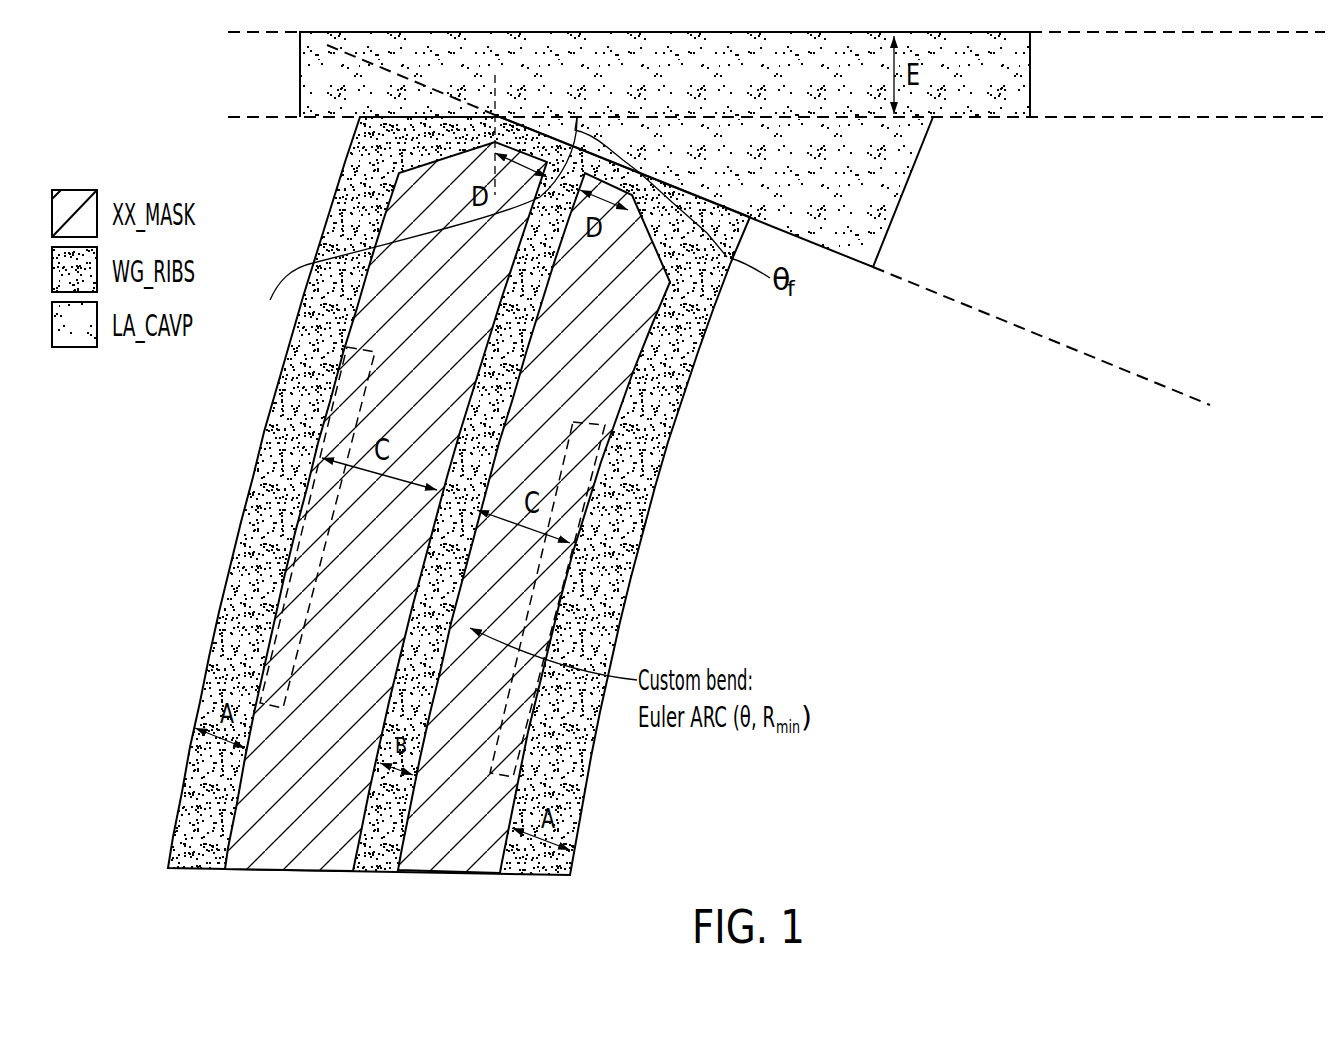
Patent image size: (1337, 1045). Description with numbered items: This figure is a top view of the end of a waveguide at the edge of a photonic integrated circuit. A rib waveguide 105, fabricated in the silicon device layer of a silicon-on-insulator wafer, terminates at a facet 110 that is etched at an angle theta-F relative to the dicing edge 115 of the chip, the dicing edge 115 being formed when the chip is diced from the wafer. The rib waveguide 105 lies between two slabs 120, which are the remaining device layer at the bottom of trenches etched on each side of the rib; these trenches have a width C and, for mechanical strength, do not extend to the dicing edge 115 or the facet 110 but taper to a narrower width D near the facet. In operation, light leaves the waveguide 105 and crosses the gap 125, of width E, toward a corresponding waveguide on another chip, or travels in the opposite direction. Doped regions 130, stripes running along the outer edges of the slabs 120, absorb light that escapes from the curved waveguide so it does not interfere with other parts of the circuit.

The rib waveguide 105 is at (493, 372).
The facet 110 is at (491, 229).
The dicing edge 115 is at (278, 118).
The slabs 120 is at (355, 327).
The gap 125 is at (300, 88).
The doped regions 130 is at (270, 469).